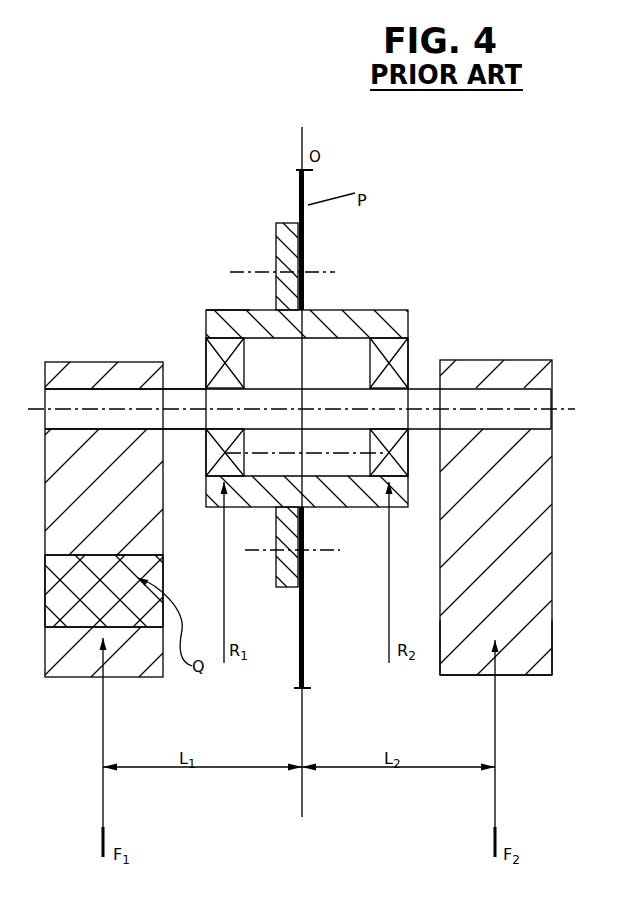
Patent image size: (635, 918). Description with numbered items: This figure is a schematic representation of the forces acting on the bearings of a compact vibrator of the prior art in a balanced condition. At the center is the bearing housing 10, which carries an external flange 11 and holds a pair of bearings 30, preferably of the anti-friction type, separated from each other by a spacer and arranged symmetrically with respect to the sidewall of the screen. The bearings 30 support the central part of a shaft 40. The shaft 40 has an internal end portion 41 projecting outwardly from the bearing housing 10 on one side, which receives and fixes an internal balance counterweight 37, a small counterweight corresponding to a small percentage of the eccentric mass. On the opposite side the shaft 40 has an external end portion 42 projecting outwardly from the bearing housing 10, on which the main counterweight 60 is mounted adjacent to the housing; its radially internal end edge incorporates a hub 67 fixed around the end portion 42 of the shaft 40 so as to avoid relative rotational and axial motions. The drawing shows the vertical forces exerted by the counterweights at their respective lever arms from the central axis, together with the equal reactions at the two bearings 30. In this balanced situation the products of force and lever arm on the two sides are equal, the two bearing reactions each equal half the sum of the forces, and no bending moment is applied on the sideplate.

The bearing housing 10 is at (247, 300).
The external flange 11 is at (277, 241).
The bearings 30 is at (403, 352).
The balance counterweight 37 is at (532, 643).
The shaft 40 is at (314, 398).
The internal end portion 41 is at (522, 397).
The external end portion 42 is at (116, 400).
The main counterweight 60 is at (149, 506).
The hub 67 is at (77, 372).